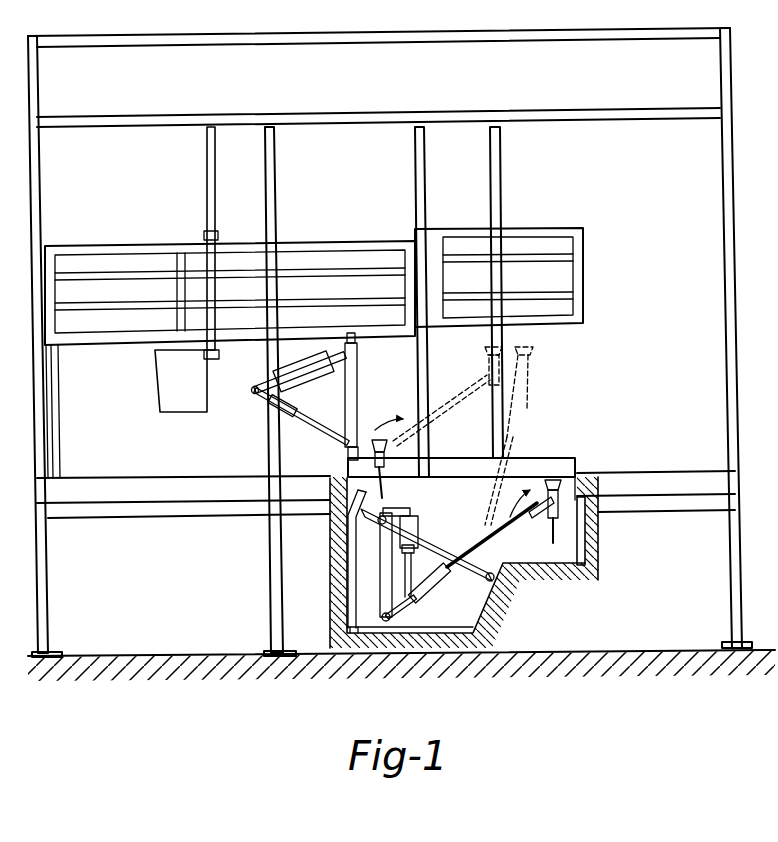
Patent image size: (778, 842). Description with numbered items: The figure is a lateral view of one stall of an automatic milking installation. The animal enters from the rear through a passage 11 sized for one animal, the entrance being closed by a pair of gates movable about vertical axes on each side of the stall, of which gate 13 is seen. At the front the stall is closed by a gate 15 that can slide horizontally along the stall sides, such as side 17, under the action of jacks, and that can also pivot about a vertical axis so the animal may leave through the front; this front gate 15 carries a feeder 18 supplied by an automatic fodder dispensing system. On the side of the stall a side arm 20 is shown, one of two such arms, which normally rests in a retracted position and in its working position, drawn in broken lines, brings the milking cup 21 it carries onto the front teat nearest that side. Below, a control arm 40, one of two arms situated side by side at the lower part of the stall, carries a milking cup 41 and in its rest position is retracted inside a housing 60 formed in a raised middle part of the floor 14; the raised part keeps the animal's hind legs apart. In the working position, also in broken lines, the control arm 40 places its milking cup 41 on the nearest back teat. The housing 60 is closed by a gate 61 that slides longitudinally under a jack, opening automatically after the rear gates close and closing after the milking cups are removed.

The passage 11 is at (700, 363).
The gate 13 is at (550, 228).
The floor 14 is at (640, 473).
The gate 15 is at (207, 186).
The side 17 is at (338, 245).
The feeder 18 is at (168, 393).
The side arm 20 is at (304, 435).
The milking cup 21 is at (392, 470).
The control arm 40 is at (437, 599).
The milking cup 41 is at (560, 515).
The housing 60 is at (545, 548).
The gate 61 is at (530, 459).